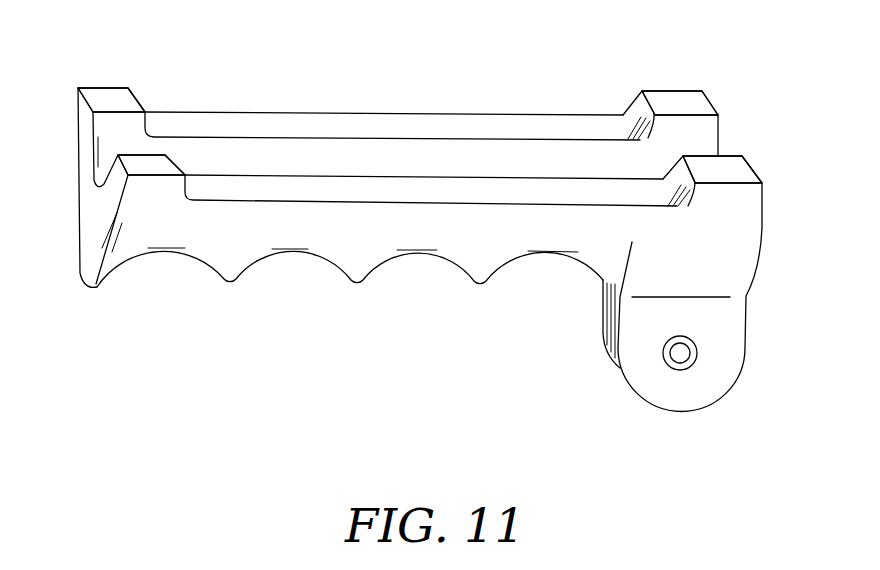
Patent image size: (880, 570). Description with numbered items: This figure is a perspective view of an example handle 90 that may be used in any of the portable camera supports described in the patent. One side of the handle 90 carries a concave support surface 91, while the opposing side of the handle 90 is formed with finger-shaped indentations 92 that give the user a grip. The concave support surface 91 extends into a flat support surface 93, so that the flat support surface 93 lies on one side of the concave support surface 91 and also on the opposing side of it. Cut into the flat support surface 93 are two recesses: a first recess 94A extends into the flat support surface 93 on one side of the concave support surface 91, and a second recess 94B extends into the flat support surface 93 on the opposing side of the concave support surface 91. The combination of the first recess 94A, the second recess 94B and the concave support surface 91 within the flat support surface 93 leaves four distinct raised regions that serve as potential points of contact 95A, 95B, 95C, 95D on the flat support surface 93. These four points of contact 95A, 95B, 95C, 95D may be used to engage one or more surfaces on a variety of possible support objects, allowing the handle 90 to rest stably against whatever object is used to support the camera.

The handle 90 is at (777, 88).
The concave support surface 91 is at (102, 173).
The finger-shaped indentations 92 is at (167, 262).
The flat support surface 93 is at (90, 92).
The first recess 94A is at (535, 190).
The second recess 94B is at (423, 125).
The first point of contact 95A is at (107, 92).
The second point of contact 95B is at (153, 158).
The third point of contact 95C is at (690, 98).
The fourth point of contact 95D is at (708, 170).